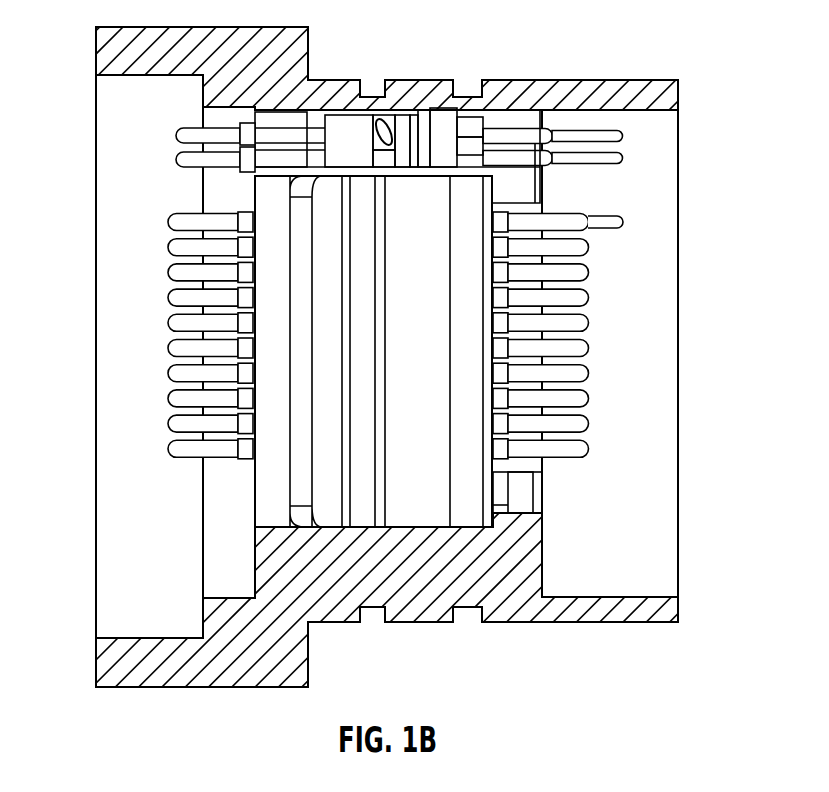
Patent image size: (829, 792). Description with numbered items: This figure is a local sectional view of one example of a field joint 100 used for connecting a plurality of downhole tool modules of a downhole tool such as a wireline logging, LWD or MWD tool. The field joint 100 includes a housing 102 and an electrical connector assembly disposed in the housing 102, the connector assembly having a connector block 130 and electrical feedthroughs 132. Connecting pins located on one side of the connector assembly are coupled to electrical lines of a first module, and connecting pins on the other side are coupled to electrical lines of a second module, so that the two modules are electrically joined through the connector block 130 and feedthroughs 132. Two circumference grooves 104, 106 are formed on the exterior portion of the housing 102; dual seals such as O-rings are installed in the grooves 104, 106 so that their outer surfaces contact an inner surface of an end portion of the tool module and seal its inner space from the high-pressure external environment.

The field joint 100 is at (600, 38).
The housing 102 is at (118, 52).
The circumference groove 104 is at (368, 93).
The circumference groove 106 is at (465, 93).
The connector block 130 is at (468, 263).
The electrical feedthroughs 132 is at (357, 125).